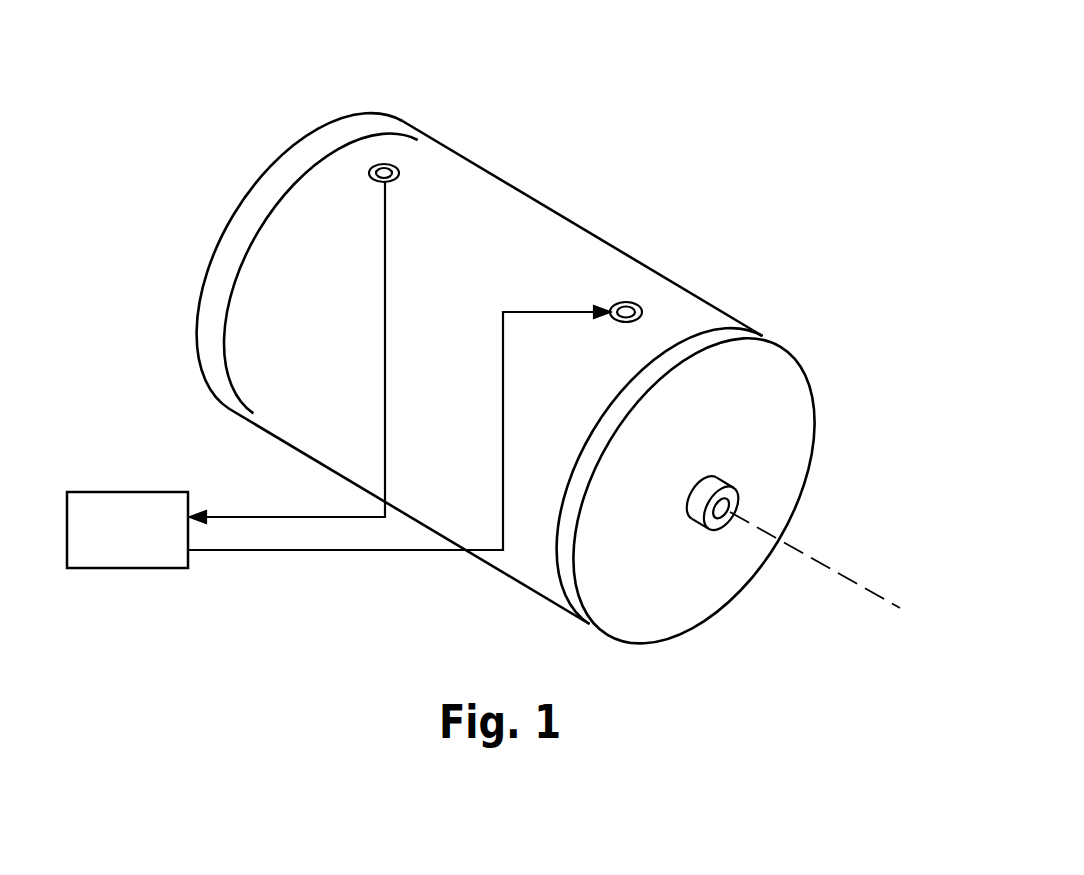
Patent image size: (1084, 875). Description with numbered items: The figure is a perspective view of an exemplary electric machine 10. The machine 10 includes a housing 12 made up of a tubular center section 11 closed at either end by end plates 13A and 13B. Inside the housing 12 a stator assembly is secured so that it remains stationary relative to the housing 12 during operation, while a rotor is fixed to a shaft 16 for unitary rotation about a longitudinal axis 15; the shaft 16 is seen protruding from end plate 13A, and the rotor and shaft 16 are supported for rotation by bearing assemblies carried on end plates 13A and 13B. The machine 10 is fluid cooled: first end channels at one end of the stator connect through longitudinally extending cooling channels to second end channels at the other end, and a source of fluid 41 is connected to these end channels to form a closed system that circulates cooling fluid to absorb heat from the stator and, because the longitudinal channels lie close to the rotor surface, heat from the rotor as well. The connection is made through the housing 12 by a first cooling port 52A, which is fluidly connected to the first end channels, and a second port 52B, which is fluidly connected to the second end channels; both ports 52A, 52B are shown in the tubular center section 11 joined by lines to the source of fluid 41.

The electric machine 10 is at (786, 192).
The tubular center section 11 is at (618, 247).
The housing 12 is at (532, 193).
The end plate 13A is at (810, 375).
The end plate 13B is at (358, 112).
The longitudinal axis 15 is at (832, 568).
The shaft 16 is at (730, 484).
The source of fluid 41 is at (135, 568).
The first cooling port 52A is at (633, 300).
The second port 52B is at (398, 168).